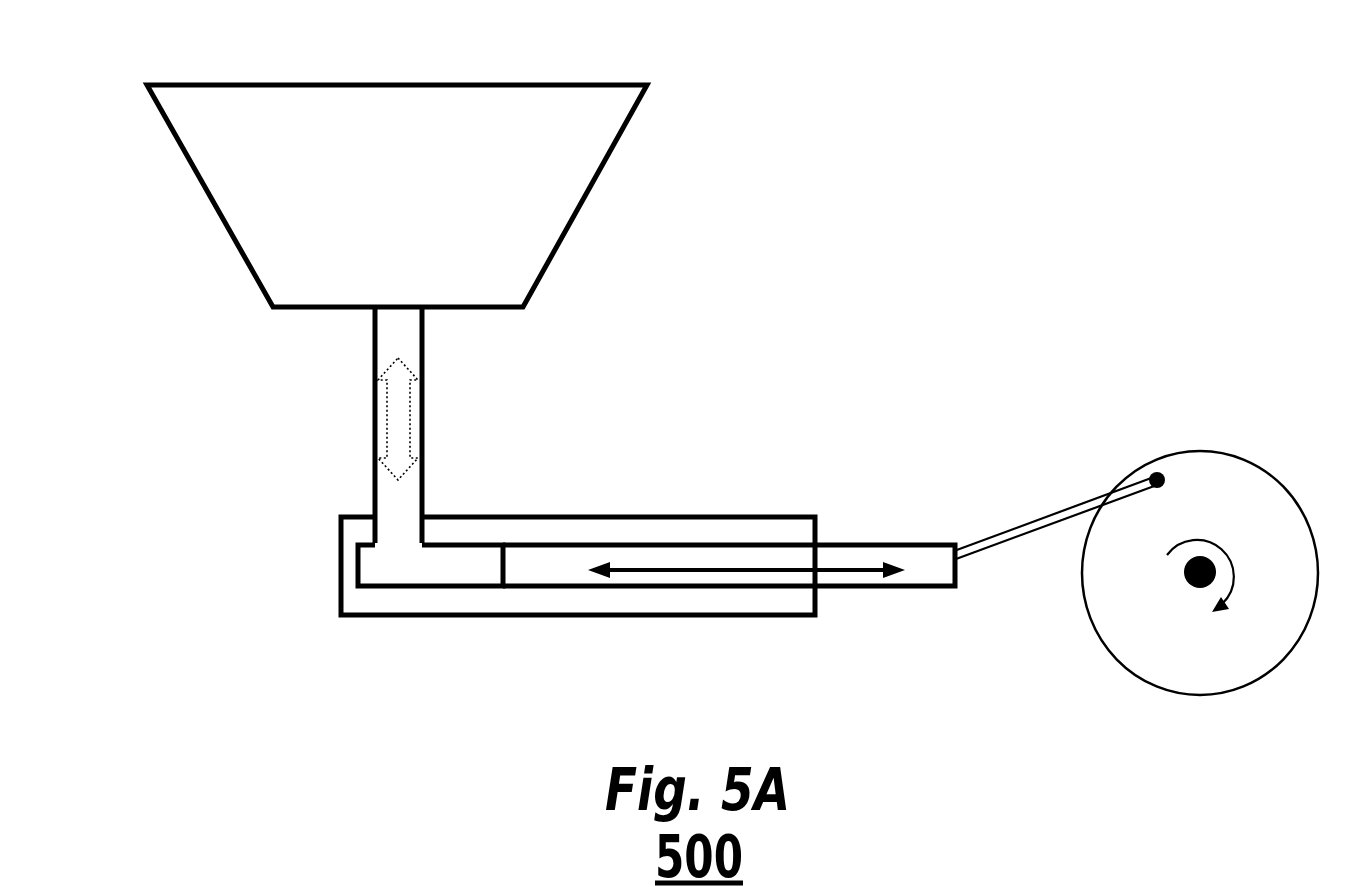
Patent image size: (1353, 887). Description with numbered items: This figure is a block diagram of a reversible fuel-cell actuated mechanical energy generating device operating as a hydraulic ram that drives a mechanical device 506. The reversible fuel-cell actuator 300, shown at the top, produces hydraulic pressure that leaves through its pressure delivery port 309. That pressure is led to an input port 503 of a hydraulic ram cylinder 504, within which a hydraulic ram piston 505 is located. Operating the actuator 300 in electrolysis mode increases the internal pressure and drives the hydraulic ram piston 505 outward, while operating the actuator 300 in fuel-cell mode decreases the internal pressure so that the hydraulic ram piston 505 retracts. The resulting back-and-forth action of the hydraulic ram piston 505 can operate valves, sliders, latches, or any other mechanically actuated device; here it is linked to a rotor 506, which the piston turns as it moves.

The reversible fuel-cell actuator 300 is at (407, 85).
The pressure delivery port 309 is at (375, 330).
The input port 503 is at (360, 513).
The hydraulic ram cylinder 504 is at (567, 508).
The hydraulic ram piston 505 is at (860, 542).
The mechanical device (rotor) 506 is at (1148, 460).